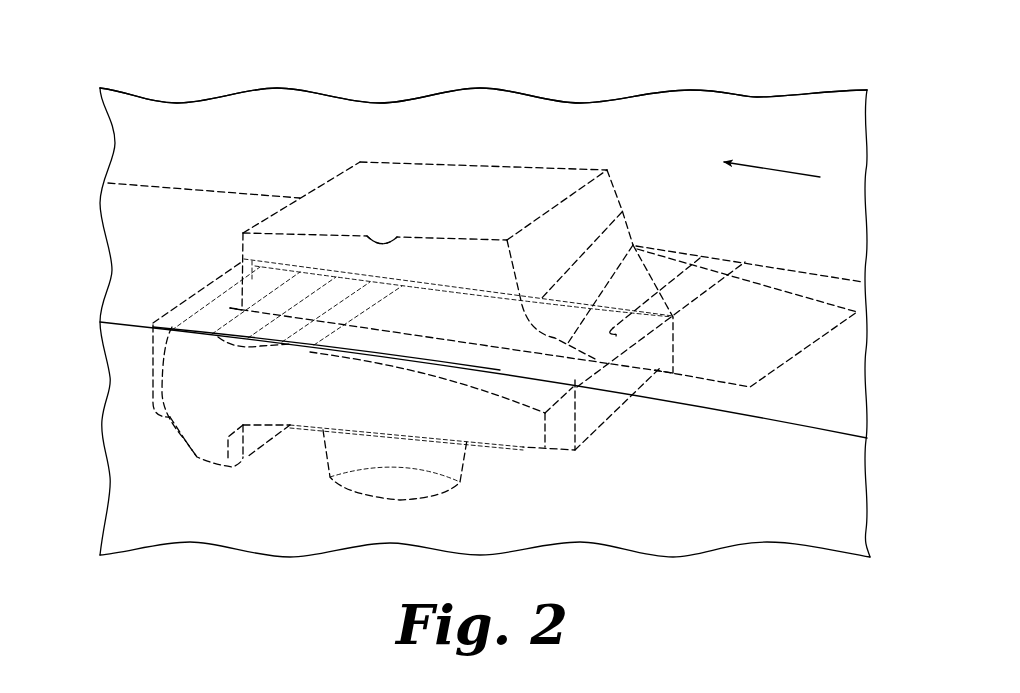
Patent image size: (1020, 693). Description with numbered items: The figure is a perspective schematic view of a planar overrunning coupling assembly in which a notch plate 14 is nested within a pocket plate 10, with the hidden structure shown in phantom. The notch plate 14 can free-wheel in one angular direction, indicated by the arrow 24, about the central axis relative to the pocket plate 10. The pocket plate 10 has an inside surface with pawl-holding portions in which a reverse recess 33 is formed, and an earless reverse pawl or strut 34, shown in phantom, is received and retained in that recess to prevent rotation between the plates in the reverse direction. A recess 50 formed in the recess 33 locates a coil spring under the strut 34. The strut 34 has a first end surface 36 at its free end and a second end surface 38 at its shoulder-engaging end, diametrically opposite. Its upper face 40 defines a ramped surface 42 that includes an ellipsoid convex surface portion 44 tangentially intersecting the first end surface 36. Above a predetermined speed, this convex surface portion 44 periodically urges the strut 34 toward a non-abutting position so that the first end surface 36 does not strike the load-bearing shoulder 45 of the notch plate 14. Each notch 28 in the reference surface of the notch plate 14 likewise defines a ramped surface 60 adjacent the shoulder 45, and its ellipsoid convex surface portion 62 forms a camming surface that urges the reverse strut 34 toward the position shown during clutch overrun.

The pocket plate 10 is at (816, 568).
The notch plate 14 is at (757, 95).
The arrow 24 is at (778, 166).
The notch 28 is at (397, 237).
The reverse recess 33 is at (217, 460).
The reverse pawl 34 is at (531, 452).
The first end surface 36 is at (596, 390).
The second end surface 38 is at (170, 417).
The upper face 40 is at (366, 322).
The ramped surface 42 is at (721, 276).
The convex surface portion 44 is at (473, 324).
The shoulder 45 is at (597, 236).
The recess 50 is at (370, 493).
The ramped surface 60 is at (746, 262).
The convex surface portion 62 is at (636, 246).